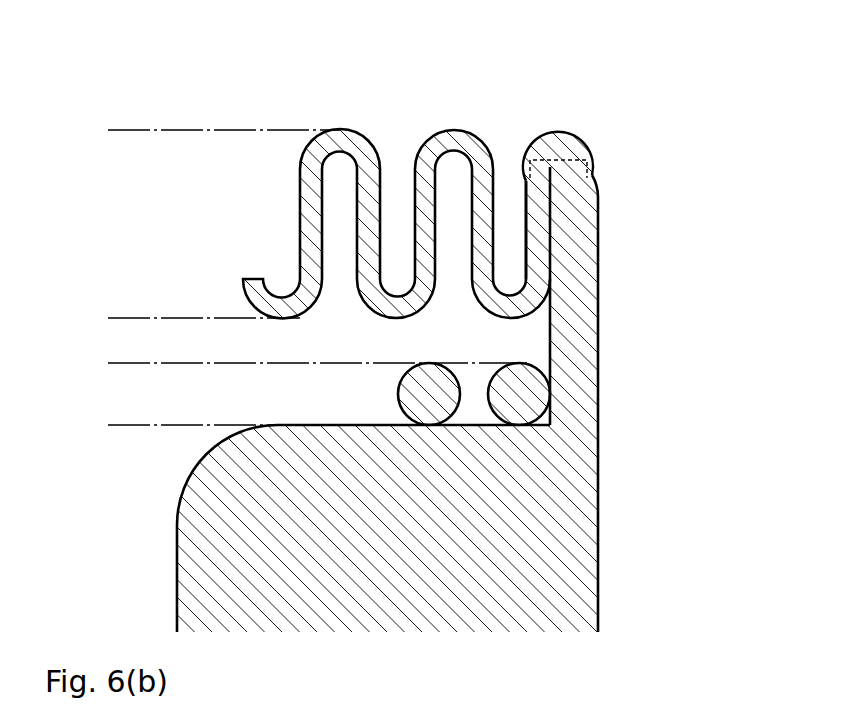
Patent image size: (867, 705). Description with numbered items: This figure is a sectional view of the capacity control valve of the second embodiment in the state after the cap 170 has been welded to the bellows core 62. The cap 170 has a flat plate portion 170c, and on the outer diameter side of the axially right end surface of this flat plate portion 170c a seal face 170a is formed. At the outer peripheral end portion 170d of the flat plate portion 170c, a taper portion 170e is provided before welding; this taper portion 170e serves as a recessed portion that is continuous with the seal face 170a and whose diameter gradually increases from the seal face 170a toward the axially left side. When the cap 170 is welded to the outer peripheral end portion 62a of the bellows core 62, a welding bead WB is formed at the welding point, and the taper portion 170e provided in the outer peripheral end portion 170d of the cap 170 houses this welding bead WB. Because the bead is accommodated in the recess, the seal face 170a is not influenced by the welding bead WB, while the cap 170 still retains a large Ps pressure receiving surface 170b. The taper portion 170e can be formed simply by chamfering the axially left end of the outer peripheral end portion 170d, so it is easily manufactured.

The bellows core 62 is at (335, 122).
The outer peripheral end portion of bellows core 62a is at (530, 207).
The welding bead WB is at (560, 142).
The cap 170 is at (623, 477).
The seal face 170a is at (598, 238).
The Ps pressure receiving surface 170b is at (598, 537).
The flat plate portion 170c is at (573, 358).
The outer peripheral end portion of cap 170d is at (562, 166).
The taper portion 170e is at (593, 177).